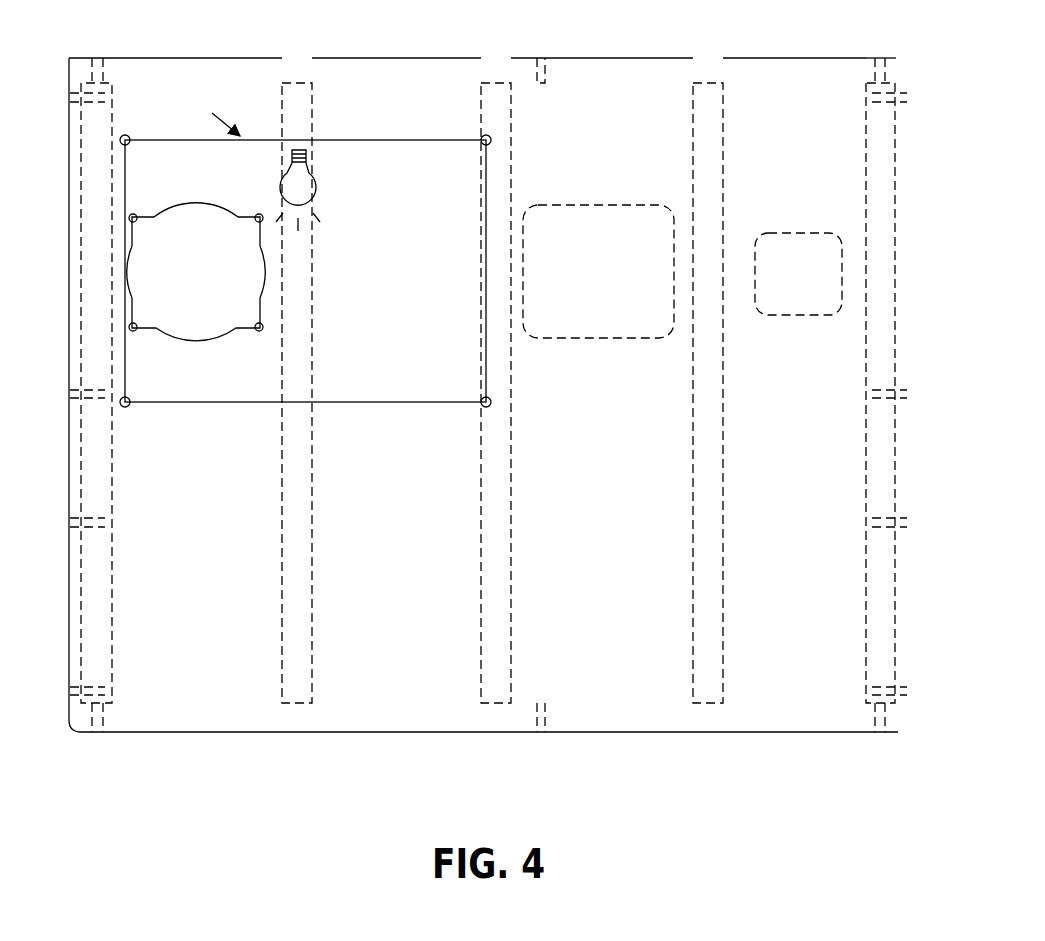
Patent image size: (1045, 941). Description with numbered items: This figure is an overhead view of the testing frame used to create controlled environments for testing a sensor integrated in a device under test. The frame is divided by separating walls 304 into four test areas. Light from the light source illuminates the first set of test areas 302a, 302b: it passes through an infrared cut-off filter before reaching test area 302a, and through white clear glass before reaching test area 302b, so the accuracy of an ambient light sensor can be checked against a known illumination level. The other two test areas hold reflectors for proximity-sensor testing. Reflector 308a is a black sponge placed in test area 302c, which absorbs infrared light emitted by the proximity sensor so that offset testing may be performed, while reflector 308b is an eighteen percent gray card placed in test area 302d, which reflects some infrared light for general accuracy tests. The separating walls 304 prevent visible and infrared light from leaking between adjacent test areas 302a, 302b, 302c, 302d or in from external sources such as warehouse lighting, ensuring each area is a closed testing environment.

The first test area 302a is at (202, 76).
The second test area 302b is at (387, 76).
The third test area 302c is at (595, 73).
The fourth test area 302d is at (777, 73).
The separating walls 304 is at (875, 604).
The reflector (black sponge) 308a is at (602, 205).
The reflector (18% gray card) 308b is at (782, 233).